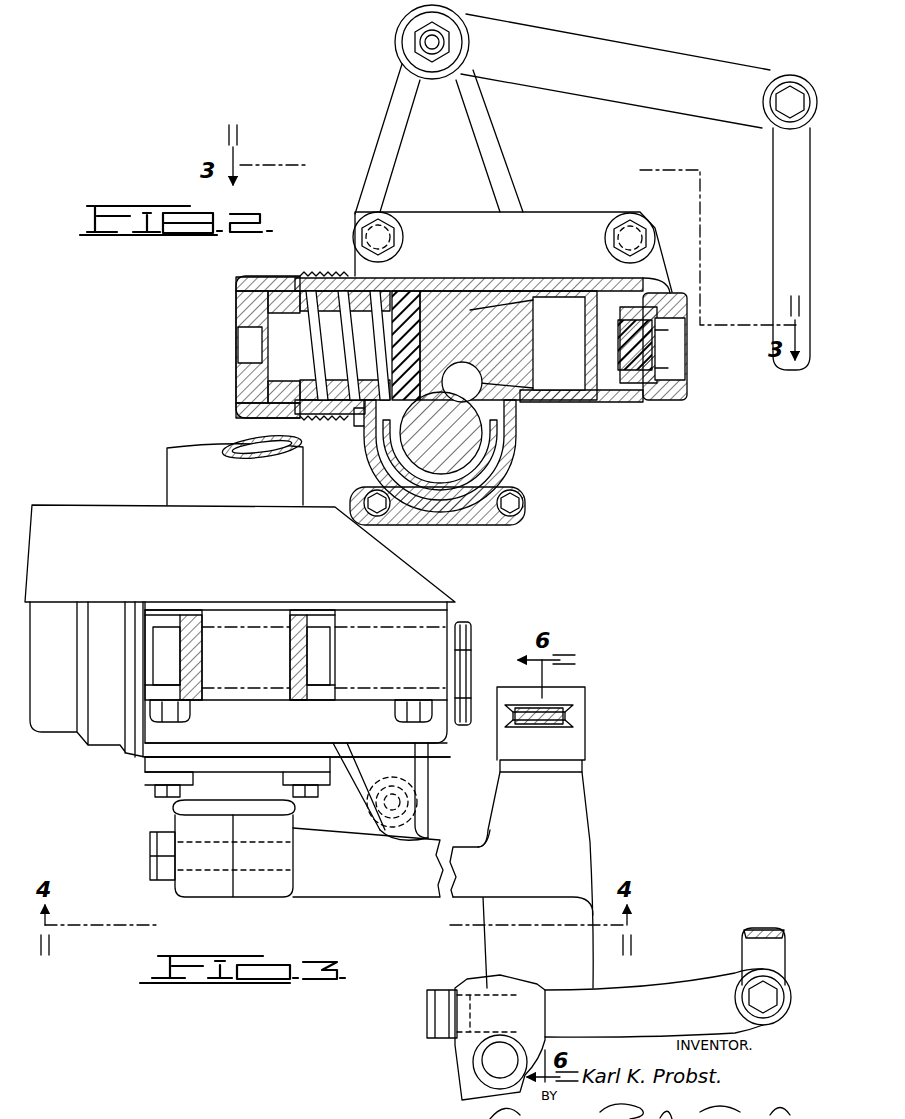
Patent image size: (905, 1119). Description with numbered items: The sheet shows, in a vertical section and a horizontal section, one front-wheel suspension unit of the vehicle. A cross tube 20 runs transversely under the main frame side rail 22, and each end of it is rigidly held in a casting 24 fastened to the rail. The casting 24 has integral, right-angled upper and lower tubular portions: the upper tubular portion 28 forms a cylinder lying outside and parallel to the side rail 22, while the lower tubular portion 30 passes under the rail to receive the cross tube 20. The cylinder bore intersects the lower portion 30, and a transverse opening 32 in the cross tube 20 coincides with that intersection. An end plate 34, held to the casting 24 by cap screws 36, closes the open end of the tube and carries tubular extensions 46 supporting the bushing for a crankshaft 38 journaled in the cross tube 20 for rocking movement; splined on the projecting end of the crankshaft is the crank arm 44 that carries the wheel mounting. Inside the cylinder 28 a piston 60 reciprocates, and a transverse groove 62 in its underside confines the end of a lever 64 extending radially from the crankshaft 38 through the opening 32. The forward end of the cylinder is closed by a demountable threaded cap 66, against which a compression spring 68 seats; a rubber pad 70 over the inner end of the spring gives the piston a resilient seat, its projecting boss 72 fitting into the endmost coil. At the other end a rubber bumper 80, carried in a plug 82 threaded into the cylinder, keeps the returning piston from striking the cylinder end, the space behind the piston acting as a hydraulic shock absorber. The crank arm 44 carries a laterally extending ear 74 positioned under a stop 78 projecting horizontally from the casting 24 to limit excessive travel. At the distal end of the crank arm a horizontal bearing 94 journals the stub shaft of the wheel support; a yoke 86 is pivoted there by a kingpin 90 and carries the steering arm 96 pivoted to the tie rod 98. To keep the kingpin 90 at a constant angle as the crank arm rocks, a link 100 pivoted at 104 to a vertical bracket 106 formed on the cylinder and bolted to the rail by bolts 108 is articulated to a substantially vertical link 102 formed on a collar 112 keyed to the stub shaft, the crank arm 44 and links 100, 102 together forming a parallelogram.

In FIG. 2, the cross tube 20 is at (508, 480).
In FIG. 3, the cross tube 20 is at (166, 464).
In FIG. 3, the main frame side rail 22 is at (74, 487).
In FIG. 2, the casting 24 is at (598, 260).
In FIG. 3, the casting 24 is at (318, 727).
In FIG. 2, the upper tubular portion 28 is at (518, 290).
In FIG. 3, the upper tubular portion 28 is at (398, 740).
In FIG. 2, the lower tubular portion 30 is at (530, 458).
In FIG. 2, the transverse opening 32 is at (358, 426).
In FIG. 3, the end plate 34 is at (152, 764).
In FIG. 2, the cap screws 36 is at (364, 500).
In FIG. 3, the cap screws 36 is at (153, 789).
In FIG. 2, the crankshaft 38 is at (462, 433).
In FIG. 3, the crank arm 44 is at (396, 885).
In FIG. 3, the tubular extensions 46 is at (205, 803).
In FIG. 2, the piston 60 is at (478, 292).
In FIG. 2, the transverse groove 62 is at (470, 330).
In FIG. 2, the lever 64 is at (483, 384).
In FIG. 2, the threaded cap 66 is at (264, 277).
In FIG. 3, the threaded cap 66 is at (54, 723).
In FIG. 2, the compression spring 68 is at (246, 304).
In FIG. 2, the rubber pad 70 is at (406, 300).
In FIG. 2, the projecting boss 72 is at (404, 294).
In FIG. 3, the laterally extending ear 74 is at (428, 833).
In FIG. 3, the stop 78 is at (403, 790).
In FIG. 2, the rubber bumper 80 is at (634, 384).
In FIG. 2, the plug 82 is at (684, 298).
In FIG. 3, the plug 82 is at (468, 625).
In FIG. 3, the yoke 86 is at (460, 1083).
In FIG. 3, the kingpin 90 is at (480, 1064).
In FIG. 3, the horizontal bearing 94 is at (575, 800).
In FIG. 3, the steering arm 96 is at (612, 1005).
In FIG. 3, the tie rod 98 is at (746, 938).
In FIG. 2, the link 100 is at (558, 43).
In FIG. 2, the link 102 is at (782, 202).
In FIG. 3, the link 102 is at (566, 720).
In FIG. 2, the pivot 104 is at (428, 42).
In FIG. 2, the vertical bracket 106 is at (398, 120).
In FIG. 3, the vertical bracket 106 is at (322, 610).
In FIG. 2, the bolts 108 is at (386, 232).
In FIG. 3, the bolts 108 is at (178, 712).
In FIG. 3, the collar 112 is at (585, 712).